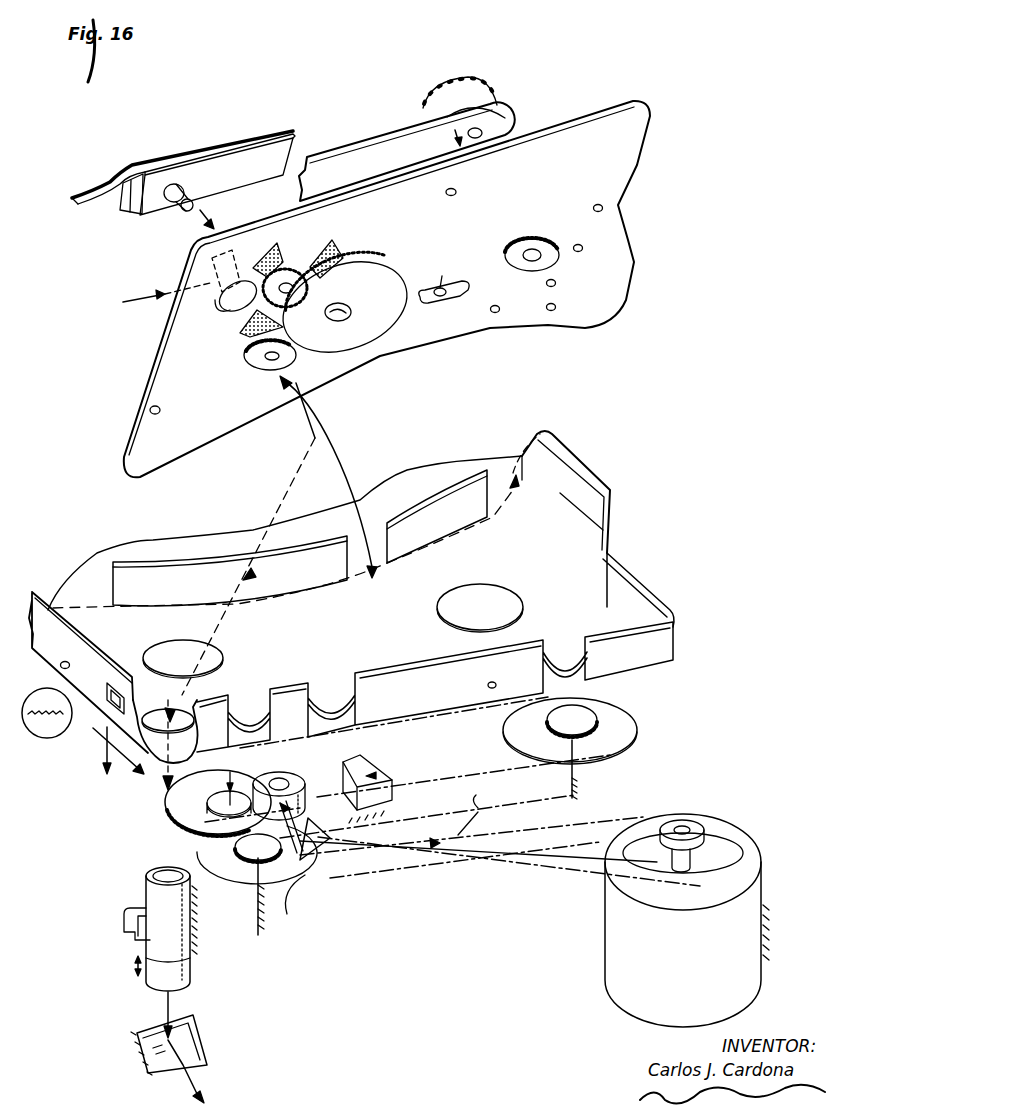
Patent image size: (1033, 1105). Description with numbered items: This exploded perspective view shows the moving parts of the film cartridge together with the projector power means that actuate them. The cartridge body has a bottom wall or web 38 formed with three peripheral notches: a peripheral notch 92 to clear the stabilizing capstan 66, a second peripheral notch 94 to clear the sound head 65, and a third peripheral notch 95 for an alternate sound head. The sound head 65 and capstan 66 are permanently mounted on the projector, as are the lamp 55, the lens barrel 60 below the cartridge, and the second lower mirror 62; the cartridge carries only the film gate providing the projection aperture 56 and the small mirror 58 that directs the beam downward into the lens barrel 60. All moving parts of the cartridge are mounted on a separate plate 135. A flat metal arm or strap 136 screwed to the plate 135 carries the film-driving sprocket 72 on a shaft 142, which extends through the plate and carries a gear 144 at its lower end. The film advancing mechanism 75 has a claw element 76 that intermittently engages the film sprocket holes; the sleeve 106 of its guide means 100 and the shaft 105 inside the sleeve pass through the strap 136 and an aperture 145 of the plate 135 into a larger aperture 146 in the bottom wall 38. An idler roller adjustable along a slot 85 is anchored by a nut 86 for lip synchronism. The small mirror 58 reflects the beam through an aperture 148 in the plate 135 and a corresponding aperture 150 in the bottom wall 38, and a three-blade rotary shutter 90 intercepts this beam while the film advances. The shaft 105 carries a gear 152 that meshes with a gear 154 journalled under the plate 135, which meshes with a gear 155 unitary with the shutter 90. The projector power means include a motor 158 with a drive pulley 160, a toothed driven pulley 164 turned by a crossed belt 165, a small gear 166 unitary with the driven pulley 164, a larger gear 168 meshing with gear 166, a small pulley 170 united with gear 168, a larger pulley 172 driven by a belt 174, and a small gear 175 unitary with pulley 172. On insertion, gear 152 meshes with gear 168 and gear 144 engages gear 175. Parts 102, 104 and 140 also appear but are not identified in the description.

The bottom wall 38 is at (365, 637).
The lamp 55 is at (30, 742).
The projection aperture 56 is at (108, 696).
The small mirror 58 is at (207, 288).
The lens barrel 60 is at (145, 893).
The second lower mirror 62 is at (162, 1022).
The sound head 65 is at (380, 777).
The stabilizing capstan 66 is at (282, 772).
The film-driving sprocket 72 is at (475, 97).
The film advancing mechanism 75 is at (226, 130).
The claw element 76 is at (74, 205).
The slot 85 is at (458, 289).
The nut 86 is at (441, 283).
The rotary shutter 90 is at (333, 258).
The peripheral notch 92 is at (240, 700).
The second peripheral notch 94 is at (322, 698).
The third peripheral notch 95 is at (562, 670).
The guide means 100 is at (248, 182).
The block 102 is at (132, 204).
The spring arm 104 is at (128, 166).
The shaft 105 is at (178, 212).
The sleeve 106 is at (183, 188).
The plate 135 is at (612, 172).
The flat metal arm 136 is at (365, 148).
The left wall 140 is at (98, 656).
The shaft 142 is at (482, 132).
The gear 144 is at (545, 240).
The aperture 145 is at (252, 365).
The larger aperture 146 is at (214, 660).
The aperture 148 is at (225, 310).
The aperture 150 is at (182, 680).
The gear 152 is at (282, 356).
The gear 154 is at (350, 282).
The gear 155 is at (282, 262).
The motor 158 is at (606, 920).
The drive pulley 160 is at (705, 815).
The driven pulley 164 is at (230, 880).
The crossed belt 165 is at (384, 870).
The small gear 166 is at (245, 856).
The larger gear 168 is at (180, 822).
The small pulley 170 is at (226, 790).
The larger pulley 172 is at (616, 726).
The belt 174 is at (462, 740).
The small gear 175 is at (592, 706).